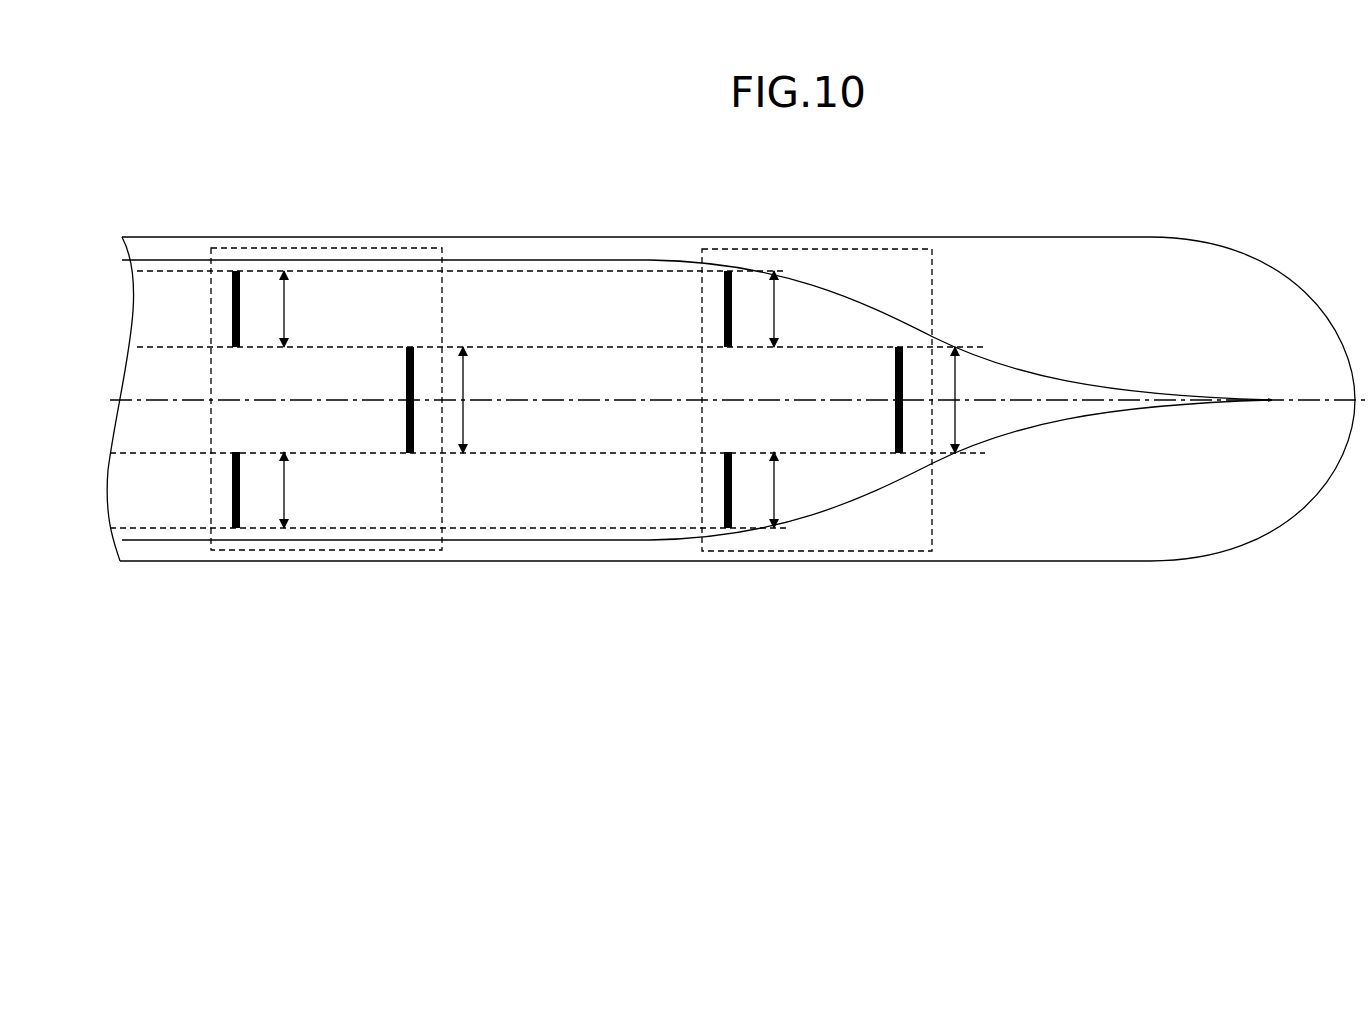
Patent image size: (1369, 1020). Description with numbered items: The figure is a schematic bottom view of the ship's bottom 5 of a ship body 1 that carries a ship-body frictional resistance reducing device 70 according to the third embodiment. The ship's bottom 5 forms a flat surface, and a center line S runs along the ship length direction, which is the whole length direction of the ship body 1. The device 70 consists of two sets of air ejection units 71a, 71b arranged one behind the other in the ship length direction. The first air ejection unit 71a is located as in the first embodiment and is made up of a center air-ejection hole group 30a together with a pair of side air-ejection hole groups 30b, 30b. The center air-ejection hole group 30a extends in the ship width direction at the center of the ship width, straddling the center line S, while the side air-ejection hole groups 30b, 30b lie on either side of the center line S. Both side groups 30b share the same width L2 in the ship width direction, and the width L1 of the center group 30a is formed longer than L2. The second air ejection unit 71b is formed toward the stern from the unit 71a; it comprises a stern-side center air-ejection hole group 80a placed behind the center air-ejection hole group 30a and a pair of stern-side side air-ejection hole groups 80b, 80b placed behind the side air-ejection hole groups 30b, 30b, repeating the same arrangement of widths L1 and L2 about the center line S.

The ship body 1 is at (1037, 236).
The ship's bottom 5 is at (1043, 431).
The ship-body frictional resistance reducing device 70 is at (829, 281).
The center air-ejection hole group 30a is at (903, 432).
The side air-ejection hole groups 30b is at (724, 488).
The stern-side center air-ejection hole group 80a is at (406, 375).
The stern-side side air-ejection hole groups 80b is at (232, 307).
The air ejection unit 71a is at (903, 553).
The air ejection unit 71b is at (413, 551).
The center line S is at (1115, 400).
The length of the center air-ejection hole group L1 is at (729, 400).
The length of the side air-ejection hole groups L2 is at (548, 399).